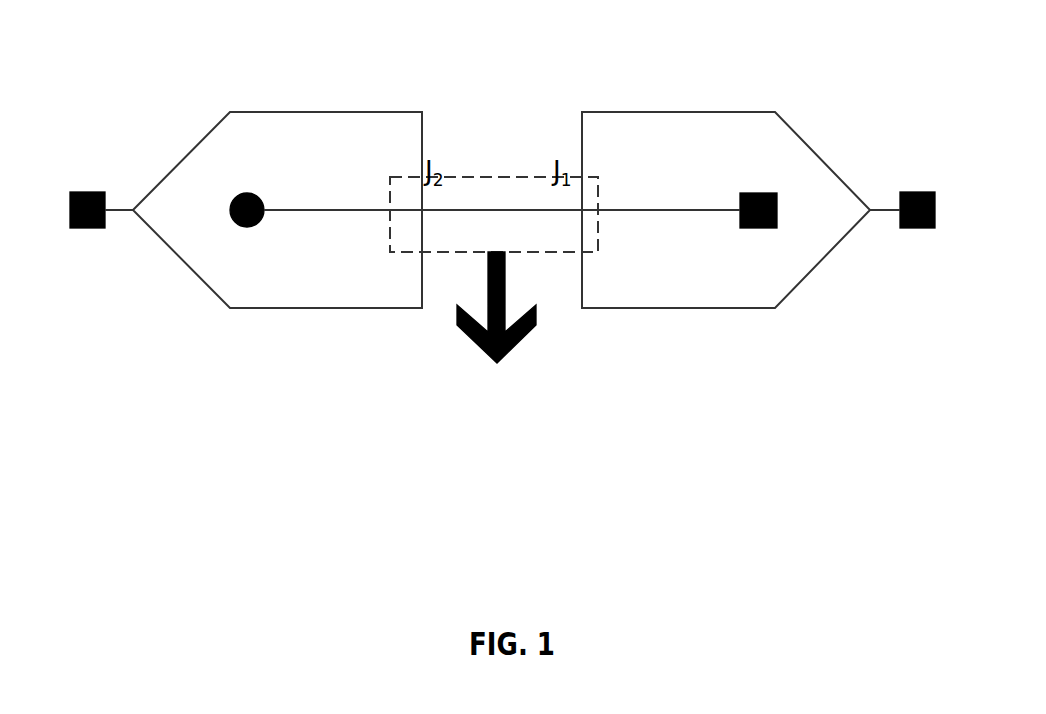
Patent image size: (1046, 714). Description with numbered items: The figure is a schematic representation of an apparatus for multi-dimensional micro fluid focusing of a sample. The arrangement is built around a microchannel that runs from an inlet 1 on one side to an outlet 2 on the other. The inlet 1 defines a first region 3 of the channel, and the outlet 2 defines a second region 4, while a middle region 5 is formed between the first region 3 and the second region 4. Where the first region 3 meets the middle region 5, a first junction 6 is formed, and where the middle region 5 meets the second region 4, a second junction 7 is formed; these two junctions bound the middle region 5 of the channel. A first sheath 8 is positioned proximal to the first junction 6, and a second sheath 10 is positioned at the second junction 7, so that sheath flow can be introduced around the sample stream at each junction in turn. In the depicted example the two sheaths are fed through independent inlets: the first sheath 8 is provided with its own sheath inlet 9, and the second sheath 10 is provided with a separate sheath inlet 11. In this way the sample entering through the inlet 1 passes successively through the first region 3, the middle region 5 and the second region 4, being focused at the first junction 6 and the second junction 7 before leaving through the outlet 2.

The inlet 1 is at (765, 228).
The outlet 2 is at (252, 228).
The first region 3 is at (632, 208).
The second region 4 is at (340, 208).
The middle region 5 is at (470, 208).
The first junction 6 is at (586, 212).
The second junction 7 is at (399, 218).
The first sheath 8 is at (803, 137).
The sheath inlet 9 is at (922, 192).
The second sheath 10 is at (196, 145).
The sheath inlet 11 is at (86, 192).